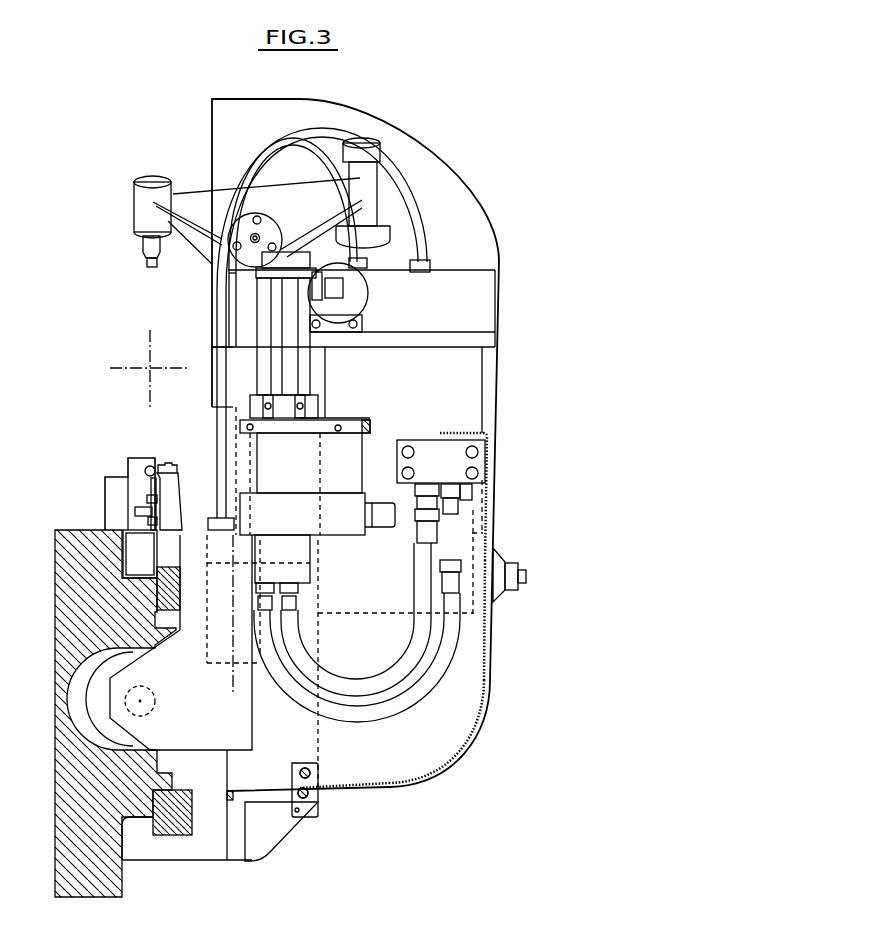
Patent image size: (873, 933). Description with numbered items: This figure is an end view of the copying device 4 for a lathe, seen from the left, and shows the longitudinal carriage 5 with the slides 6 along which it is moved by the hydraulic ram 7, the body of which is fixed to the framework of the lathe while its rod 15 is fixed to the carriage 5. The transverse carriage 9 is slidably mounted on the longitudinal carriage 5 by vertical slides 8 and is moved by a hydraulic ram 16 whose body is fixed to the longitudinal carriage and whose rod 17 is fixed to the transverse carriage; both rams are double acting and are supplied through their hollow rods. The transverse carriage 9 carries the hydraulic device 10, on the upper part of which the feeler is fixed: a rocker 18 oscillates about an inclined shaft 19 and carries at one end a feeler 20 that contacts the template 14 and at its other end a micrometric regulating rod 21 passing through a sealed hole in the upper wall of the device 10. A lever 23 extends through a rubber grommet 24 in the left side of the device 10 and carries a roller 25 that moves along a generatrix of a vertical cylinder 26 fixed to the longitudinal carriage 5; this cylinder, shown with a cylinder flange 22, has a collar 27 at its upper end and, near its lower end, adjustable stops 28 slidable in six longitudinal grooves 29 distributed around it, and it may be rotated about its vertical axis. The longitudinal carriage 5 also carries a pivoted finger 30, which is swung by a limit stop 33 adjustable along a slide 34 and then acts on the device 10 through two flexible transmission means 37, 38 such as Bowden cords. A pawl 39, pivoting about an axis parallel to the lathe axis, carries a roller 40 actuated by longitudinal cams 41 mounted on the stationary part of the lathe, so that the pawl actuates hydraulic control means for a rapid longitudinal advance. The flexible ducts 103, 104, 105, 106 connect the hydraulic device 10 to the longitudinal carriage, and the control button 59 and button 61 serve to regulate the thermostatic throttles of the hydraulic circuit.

The copying device 4 is at (510, 319).
The longitudinal carriage 5 is at (207, 830).
The slides 6 is at (168, 591).
The hydraulic ram 7 is at (102, 687).
The vertical slides 8 is at (235, 837).
The transverse carriage 9 is at (318, 735).
The hydraulic device 10 is at (440, 397).
The template 14 is at (146, 364).
The rod 15 is at (126, 703).
The hydraulic ram 16 is at (205, 638).
The rod 17 is at (250, 473).
The rocker 18 is at (210, 203).
The shaft 19 is at (259, 237).
The feeler 20 is at (148, 263).
The micrometric regulating rod 21 is at (373, 225).
The cylinder flange 22 is at (386, 242).
The lever 23 is at (341, 286).
The rubber grommet 24 is at (352, 302).
The roller 25 is at (318, 290).
The vertical cylinder 26 is at (265, 339).
The collar 27 is at (262, 279).
The adjustable stops 28 is at (270, 399).
The longitudinal grooves 29 is at (300, 322).
The finger 30 is at (150, 519).
The limit stop 33 is at (150, 498).
The slide 34 is at (137, 510).
The flexible transmission means 37 is at (399, 180).
The flexible transmission means 38 is at (333, 148).
The pawl 39 is at (168, 490).
The roller 40 is at (162, 466).
The longitudinal cams 41 is at (151, 466).
The control button 59 is at (512, 562).
The button 61 is at (533, 554).
The duct 103 is at (456, 685).
The duct 104 is at (524, 640).
The duct 105 is at (477, 731).
The duct 106 is at (432, 764).